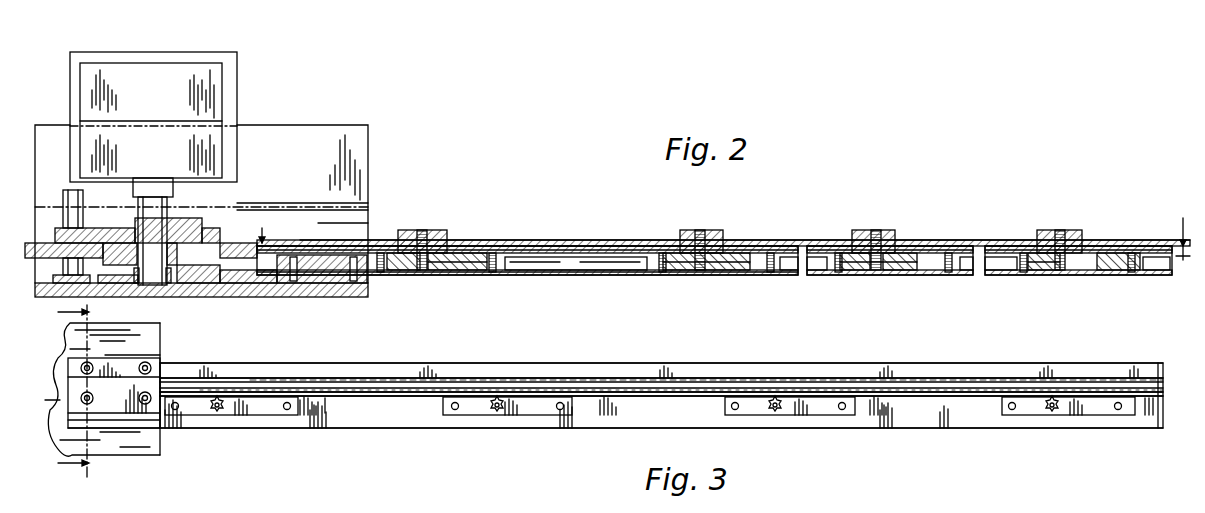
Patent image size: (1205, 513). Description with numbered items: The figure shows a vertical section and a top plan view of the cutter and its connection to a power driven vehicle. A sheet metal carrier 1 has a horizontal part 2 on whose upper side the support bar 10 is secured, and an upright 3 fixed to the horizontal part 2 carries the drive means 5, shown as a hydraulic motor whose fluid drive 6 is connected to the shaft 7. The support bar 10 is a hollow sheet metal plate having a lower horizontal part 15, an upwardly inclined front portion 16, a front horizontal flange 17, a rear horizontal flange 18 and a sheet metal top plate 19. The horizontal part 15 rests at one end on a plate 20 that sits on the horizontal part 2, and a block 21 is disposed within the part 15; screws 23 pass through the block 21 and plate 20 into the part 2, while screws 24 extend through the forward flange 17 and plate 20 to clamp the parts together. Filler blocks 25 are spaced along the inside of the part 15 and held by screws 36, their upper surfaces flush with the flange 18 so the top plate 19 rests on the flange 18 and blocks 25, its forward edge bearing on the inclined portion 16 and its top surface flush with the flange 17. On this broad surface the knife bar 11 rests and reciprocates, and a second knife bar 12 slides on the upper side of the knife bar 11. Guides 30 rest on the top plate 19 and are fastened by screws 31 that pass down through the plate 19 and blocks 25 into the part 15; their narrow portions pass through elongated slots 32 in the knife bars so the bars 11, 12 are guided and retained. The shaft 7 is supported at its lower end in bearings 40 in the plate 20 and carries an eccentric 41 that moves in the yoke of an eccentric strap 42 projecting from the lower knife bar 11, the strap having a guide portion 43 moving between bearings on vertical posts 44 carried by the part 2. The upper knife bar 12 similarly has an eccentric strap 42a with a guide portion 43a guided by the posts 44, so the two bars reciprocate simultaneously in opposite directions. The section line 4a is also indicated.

In FIG. 2, the sheet metal carrier 1 is at (372, 157).
In FIG. 2, the horizontal part 2 is at (262, 297).
In FIG. 3, the horizontal part 2 is at (152, 445).
In FIG. 2, the upright 3 is at (232, 92).
In FIG. 2, the section line 4a is at (57, 392).
In FIG. 2, the drive means 5 is at (168, 110).
In FIG. 2, the fluid drive 6 is at (168, 173).
In FIG. 2, the shaft 7 is at (165, 222).
In FIG. 2, the support bar 10 is at (548, 280).
In FIG. 3, the support bar 10 is at (760, 358).
In FIG. 2, the knife bar 11 is at (578, 248).
In FIG. 2, the knife bar 12 is at (525, 247).
In FIG. 2, the lower horizontal part 15 is at (605, 275).
In FIG. 3, the lower horizontal part 15 is at (682, 412).
In FIG. 2, the upwardly inclined front portion 16 is at (630, 262).
In FIG. 3, the upwardly inclined front portion 16 is at (620, 388).
In FIG. 3, the front horizontal flange 17 is at (370, 364).
In FIG. 3, the rear horizontal flange 18 is at (100, 440).
In FIG. 2, the top plate 19 is at (520, 275).
In FIG. 2, the plate 20 is at (225, 258).
In FIG. 3, the plate 20 is at (66, 380).
In FIG. 2, the block 21 is at (300, 283).
In FIG. 3, the block 21 is at (118, 428).
In FIG. 2, the screws 23 is at (345, 283).
In FIG. 3, the screws 23 is at (82, 396).
In FIG. 3, the screws 24 is at (82, 366).
In FIG. 2, the filler blocks 25 is at (455, 275).
In FIG. 3, the filler blocks 25 is at (245, 416).
In FIG. 2, the guides 30 is at (432, 230).
In FIG. 2, the screws 31 is at (422, 230).
In FIG. 2, the elongated slots 32 is at (388, 240).
In FIG. 2, the screws 36 is at (381, 275).
In FIG. 3, the screws 36 is at (175, 410).
In FIG. 2, the bearings 40 is at (168, 283).
In FIG. 2, the eccentric 41 is at (168, 235).
In FIG. 2, the eccentric strap 42 is at (120, 265).
In FIG. 2, the eccentric strap 42a is at (205, 232).
In FIG. 2, the guide portion 43 is at (30, 246).
In FIG. 2, the guide portion 43a is at (98, 230).
In FIG. 2, the vertical posts 44 is at (70, 192).